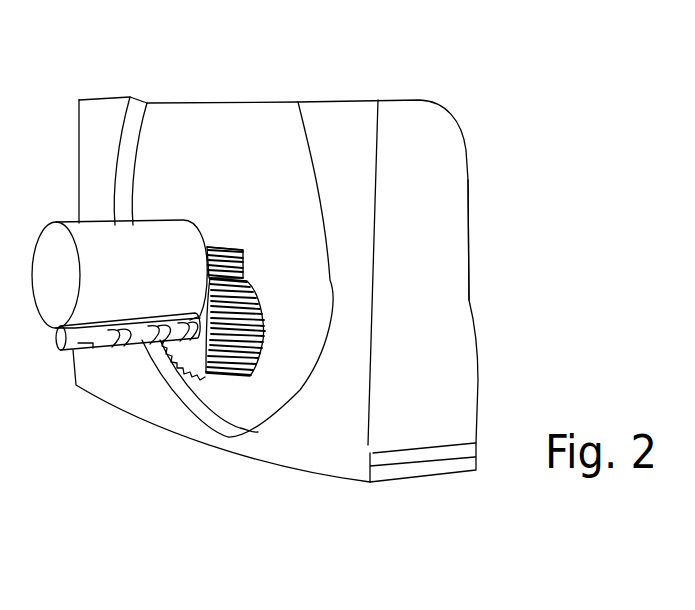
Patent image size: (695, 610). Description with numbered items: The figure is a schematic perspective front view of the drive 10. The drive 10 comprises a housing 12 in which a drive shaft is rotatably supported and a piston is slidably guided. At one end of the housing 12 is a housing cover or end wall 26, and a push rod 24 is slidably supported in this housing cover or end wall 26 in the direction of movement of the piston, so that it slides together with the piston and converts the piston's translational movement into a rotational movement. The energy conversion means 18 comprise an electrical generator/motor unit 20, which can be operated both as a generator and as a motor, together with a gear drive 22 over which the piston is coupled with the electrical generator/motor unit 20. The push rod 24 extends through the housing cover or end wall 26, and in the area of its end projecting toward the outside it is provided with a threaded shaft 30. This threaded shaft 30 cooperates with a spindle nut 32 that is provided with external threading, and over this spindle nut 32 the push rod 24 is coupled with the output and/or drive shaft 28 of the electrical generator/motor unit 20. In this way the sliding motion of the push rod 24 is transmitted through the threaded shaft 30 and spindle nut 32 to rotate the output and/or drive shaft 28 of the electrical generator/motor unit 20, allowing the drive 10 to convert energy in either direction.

The drive 10 is at (335, 58).
The housing 12 is at (437, 470).
The energy conversion means 18 is at (204, 205).
The electrical generator/motor unit 20 is at (92, 240).
The gear drive 22 is at (160, 383).
The push rod 24 is at (85, 337).
The housing cover or end wall 26 is at (425, 245).
The output and/or drive shaft 28 is at (222, 247).
The threaded shaft 30 is at (128, 345).
The spindle nut 32 is at (246, 372).